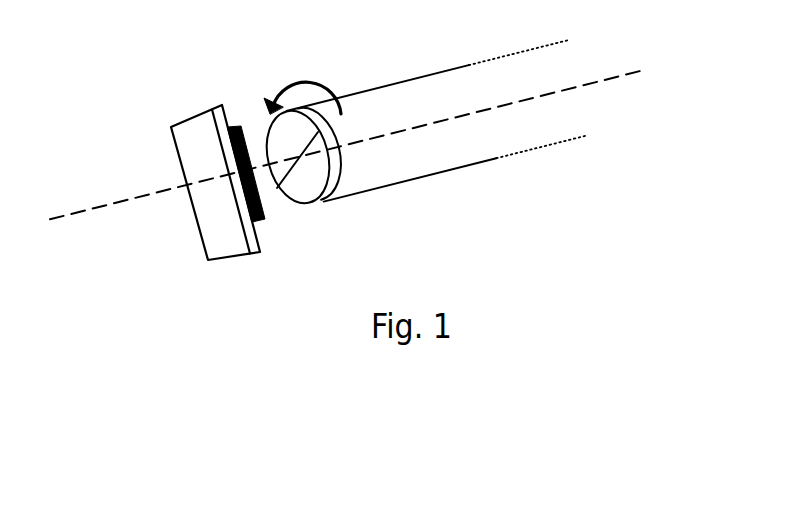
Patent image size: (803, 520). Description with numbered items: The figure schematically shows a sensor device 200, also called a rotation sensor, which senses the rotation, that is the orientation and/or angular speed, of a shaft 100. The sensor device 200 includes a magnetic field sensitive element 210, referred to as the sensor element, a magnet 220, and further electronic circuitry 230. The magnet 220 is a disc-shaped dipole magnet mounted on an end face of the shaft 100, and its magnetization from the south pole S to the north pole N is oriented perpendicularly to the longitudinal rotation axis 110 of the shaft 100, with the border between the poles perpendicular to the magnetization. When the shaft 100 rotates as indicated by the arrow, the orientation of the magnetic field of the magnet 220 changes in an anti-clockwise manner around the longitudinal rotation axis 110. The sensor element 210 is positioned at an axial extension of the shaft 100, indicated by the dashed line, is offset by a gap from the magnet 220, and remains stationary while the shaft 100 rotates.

The shaft 100 is at (417, 77).
The longitudinal rotation axis 110 is at (625, 72).
The sensor device 200 is at (218, 165).
The magnetic field sensitive element 210 is at (262, 224).
The magnet 220 is at (300, 208).
The electronic circuitry 230 is at (200, 225).